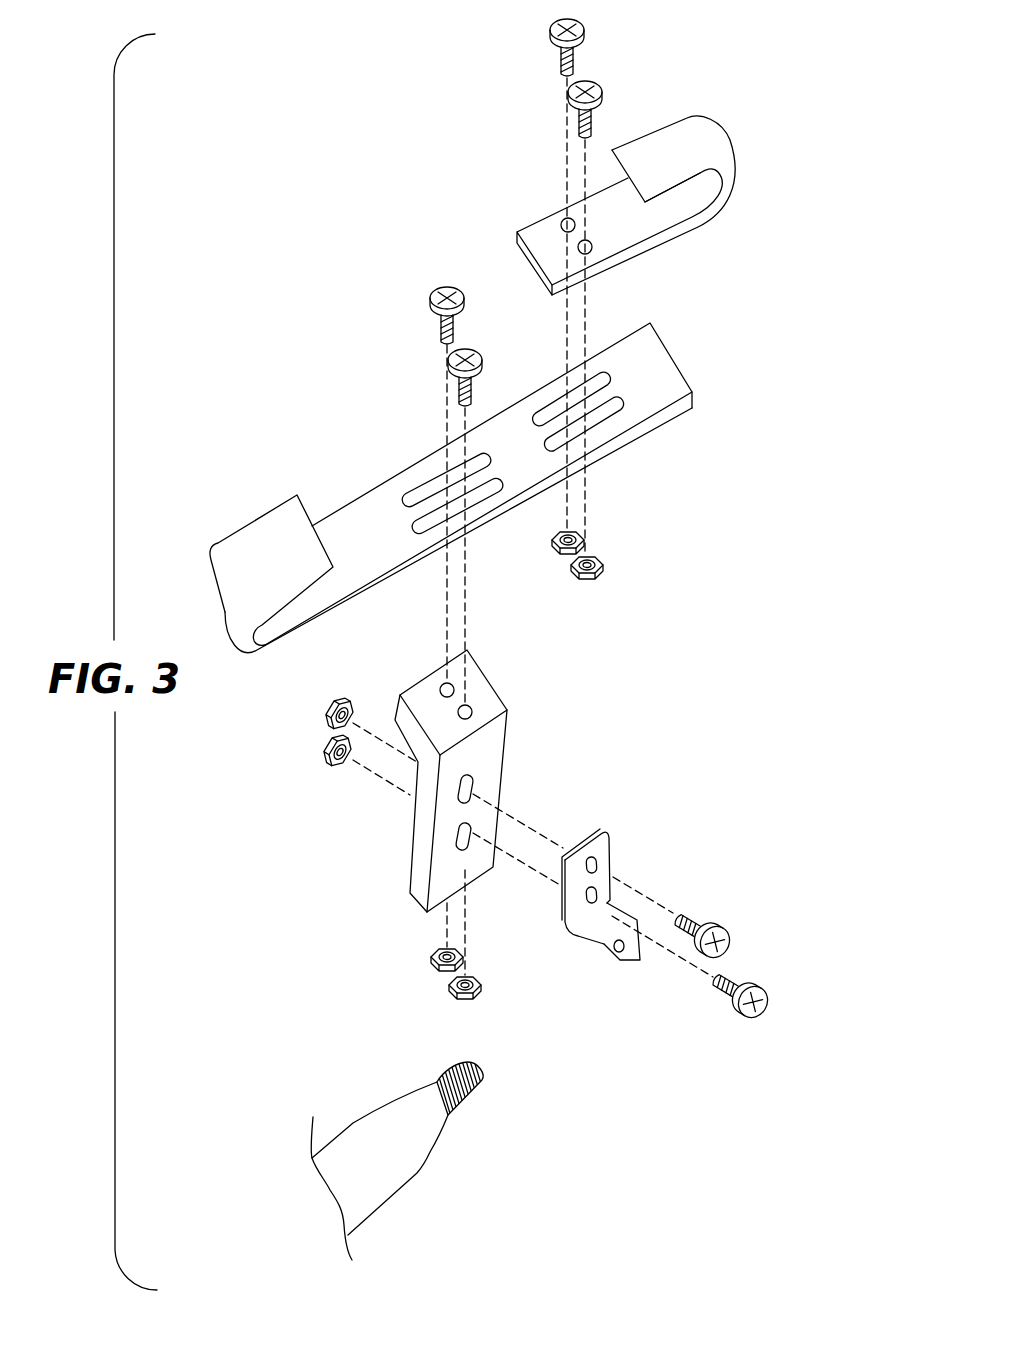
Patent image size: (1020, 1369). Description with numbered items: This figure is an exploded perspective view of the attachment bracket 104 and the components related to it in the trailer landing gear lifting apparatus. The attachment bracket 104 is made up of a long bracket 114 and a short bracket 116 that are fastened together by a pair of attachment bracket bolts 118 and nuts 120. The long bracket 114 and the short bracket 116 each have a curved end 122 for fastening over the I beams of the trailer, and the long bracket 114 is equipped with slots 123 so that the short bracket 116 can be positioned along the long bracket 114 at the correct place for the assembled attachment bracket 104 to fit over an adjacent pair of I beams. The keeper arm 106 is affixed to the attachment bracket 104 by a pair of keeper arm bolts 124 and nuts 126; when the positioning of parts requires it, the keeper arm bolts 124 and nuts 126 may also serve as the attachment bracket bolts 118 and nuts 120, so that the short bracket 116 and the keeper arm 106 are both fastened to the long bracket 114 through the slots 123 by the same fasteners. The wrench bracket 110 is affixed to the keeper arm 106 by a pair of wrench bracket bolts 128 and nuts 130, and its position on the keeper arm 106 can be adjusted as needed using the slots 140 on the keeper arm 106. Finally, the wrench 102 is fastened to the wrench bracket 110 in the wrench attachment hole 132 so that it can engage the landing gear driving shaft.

The wrench 102 is at (383, 1150).
The attachment bracket 104 is at (755, 427).
The keeper arm 106 is at (487, 702).
The wrench bracket 110 is at (607, 860).
The long bracket 114 is at (363, 520).
The short bracket 116 is at (680, 205).
The attachment bracket bolts 118 is at (577, 123).
The attachment bracket nuts 120 is at (583, 545).
The curved end 122 is at (685, 137).
The slots 123 is at (617, 410).
The keeper arm bolts 124 is at (458, 390).
The keeper arm nuts 126 is at (450, 983).
The wrench bracket bolts 128 is at (750, 980).
The wrench bracket nuts 130 is at (328, 747).
The wrench attachment hole 132 is at (636, 950).
The slots 140 is at (472, 840).